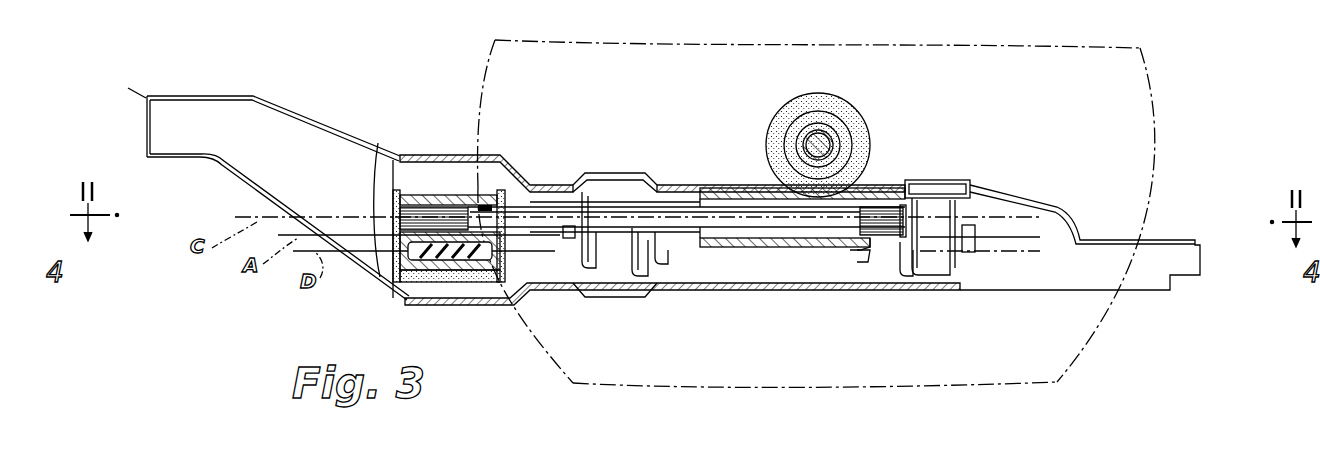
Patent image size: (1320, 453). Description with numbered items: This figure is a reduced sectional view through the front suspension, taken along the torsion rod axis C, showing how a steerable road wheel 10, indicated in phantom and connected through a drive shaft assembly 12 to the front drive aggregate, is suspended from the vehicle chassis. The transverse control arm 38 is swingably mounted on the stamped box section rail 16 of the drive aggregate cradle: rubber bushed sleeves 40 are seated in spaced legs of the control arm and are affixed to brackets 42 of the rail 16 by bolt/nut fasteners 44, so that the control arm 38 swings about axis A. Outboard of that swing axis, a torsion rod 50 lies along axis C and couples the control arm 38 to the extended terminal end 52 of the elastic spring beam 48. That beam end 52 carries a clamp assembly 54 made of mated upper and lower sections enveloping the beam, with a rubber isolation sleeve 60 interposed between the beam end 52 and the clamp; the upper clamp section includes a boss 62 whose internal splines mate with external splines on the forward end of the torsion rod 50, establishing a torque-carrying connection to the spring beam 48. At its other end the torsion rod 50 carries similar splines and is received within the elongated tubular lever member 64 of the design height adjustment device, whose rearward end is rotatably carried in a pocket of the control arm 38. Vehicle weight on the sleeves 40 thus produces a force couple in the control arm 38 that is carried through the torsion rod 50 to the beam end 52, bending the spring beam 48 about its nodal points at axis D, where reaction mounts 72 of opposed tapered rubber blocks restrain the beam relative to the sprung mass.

The road wheel 10 is at (1145, 131).
The drive shaft assembly 12 is at (830, 140).
The box section rail 16 is at (520, 180).
The transverse control arm 38 is at (745, 188).
The rubber bushed sleeve 40 is at (641, 270).
The bracket 42 is at (660, 262).
The bolt/nut fastener 44 is at (574, 238).
The spring beam 48 is at (435, 262).
The torsion rod 50 is at (760, 228).
The terminal end of the spring beam 52 is at (462, 255).
The clamp assembly 54 is at (398, 197).
The isolation sleeve 60 is at (450, 258).
The boss 62 is at (488, 200).
The tubular lever member 64 is at (866, 190).
The reaction mount 72 is at (400, 218).